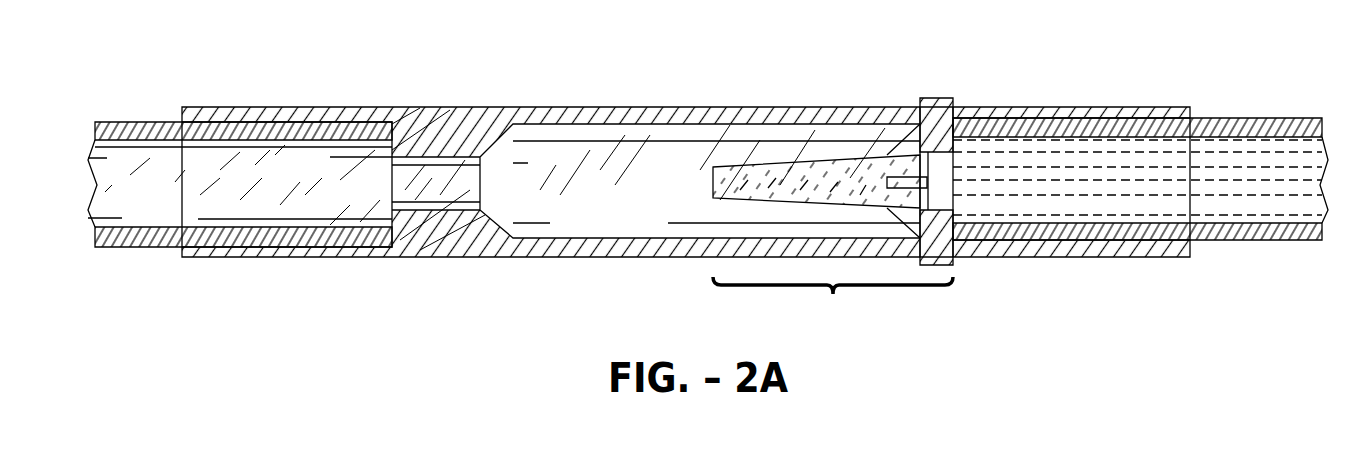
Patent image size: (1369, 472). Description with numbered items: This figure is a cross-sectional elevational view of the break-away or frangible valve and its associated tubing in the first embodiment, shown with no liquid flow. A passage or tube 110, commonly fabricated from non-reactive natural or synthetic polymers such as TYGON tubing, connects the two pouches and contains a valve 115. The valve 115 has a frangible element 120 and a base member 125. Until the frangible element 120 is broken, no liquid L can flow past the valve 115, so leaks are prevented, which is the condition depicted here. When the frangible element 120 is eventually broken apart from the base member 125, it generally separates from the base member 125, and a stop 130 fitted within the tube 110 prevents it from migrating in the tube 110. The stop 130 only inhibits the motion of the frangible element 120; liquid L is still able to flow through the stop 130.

The tube 110 is at (570, 258).
The valve 115 is at (833, 307).
The frangible element 120 is at (805, 170).
The base member 125 is at (933, 140).
The stop 130 is at (435, 140).
The liquid L is at (1130, 215).